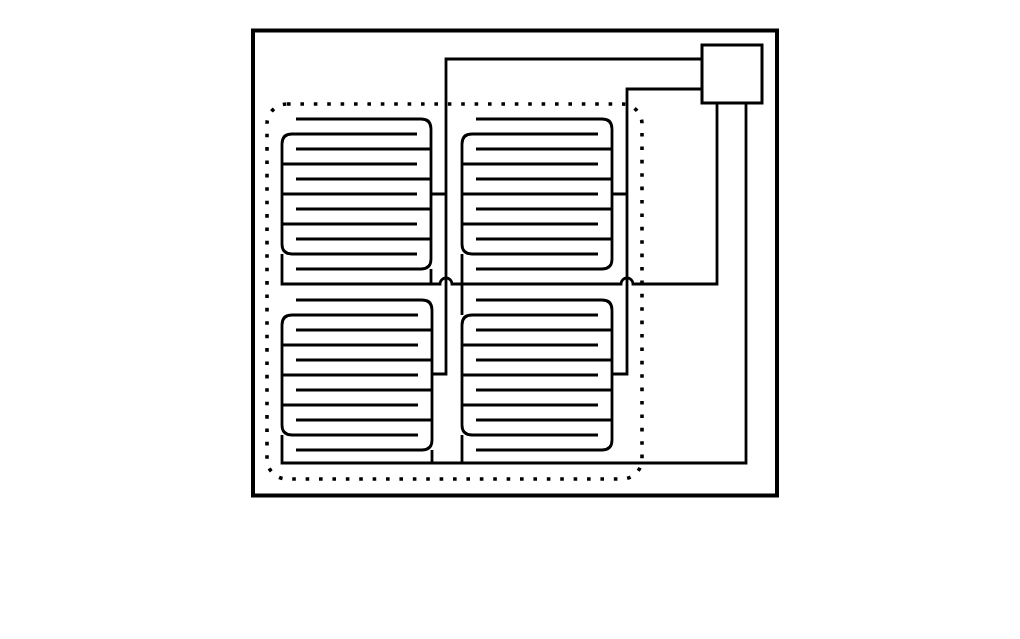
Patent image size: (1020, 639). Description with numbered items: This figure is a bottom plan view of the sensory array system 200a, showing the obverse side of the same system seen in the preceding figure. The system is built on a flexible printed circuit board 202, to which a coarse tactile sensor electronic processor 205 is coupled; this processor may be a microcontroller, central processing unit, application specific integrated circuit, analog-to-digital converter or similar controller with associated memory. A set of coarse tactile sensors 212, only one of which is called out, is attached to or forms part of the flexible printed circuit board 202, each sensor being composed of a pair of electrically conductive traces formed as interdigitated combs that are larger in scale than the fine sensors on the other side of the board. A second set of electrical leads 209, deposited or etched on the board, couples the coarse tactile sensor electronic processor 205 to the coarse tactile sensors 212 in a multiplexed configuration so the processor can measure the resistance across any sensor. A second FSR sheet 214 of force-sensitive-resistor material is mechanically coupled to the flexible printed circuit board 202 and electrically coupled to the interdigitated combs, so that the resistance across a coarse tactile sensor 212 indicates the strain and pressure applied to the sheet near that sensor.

The sensory array system 200a is at (190, 60).
The flexible printed circuit board 202 is at (267, 483).
The coarse tactile sensor electronic processor 205 is at (762, 58).
The second set of electrical leads 209 is at (747, 348).
The coarse tactile sensors 212 is at (307, 240).
The second FSR sheet 214 is at (635, 470).